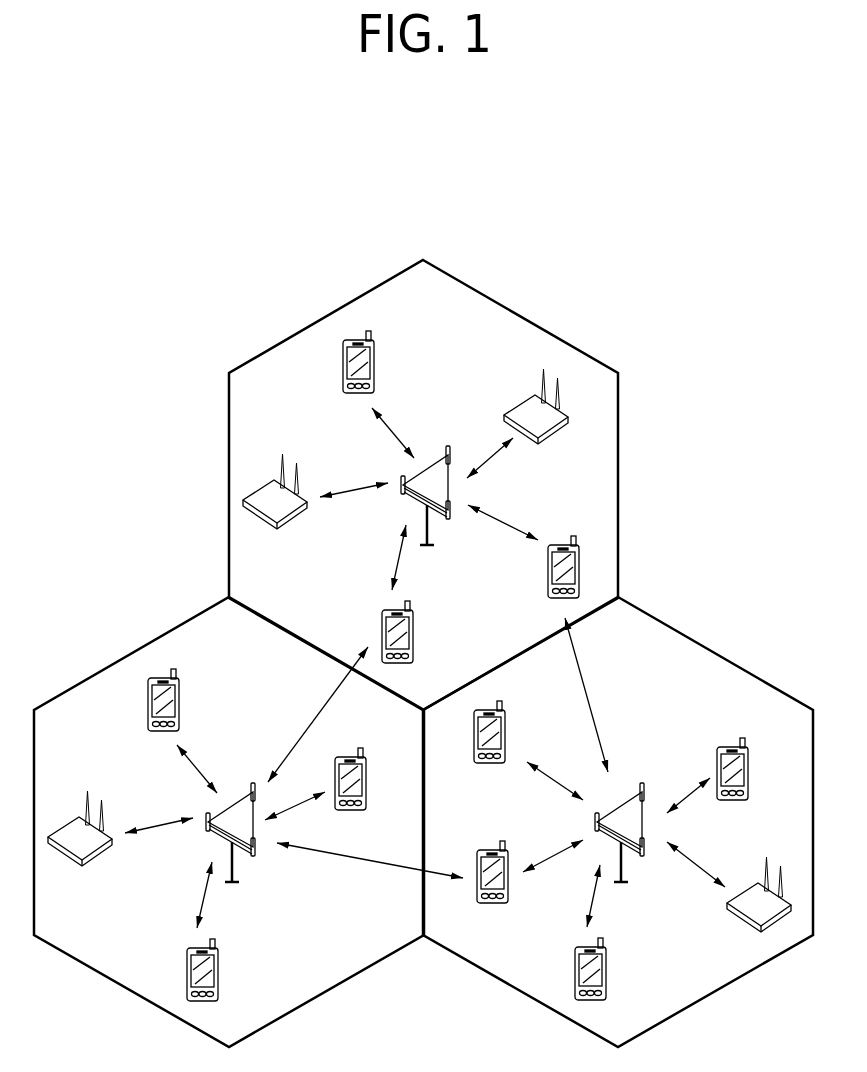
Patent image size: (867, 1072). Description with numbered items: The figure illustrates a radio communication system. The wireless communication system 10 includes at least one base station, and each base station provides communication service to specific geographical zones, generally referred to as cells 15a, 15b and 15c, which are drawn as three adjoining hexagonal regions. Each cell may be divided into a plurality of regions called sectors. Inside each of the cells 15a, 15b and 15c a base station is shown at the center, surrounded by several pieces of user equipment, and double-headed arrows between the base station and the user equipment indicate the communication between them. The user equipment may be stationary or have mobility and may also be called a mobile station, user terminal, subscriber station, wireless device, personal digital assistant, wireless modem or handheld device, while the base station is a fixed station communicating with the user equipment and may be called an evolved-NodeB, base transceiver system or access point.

The wireless communication system 10 is at (712, 372).
The cell 15a is at (618, 473).
The cell 15b is at (744, 668).
The cell 15c is at (105, 668).